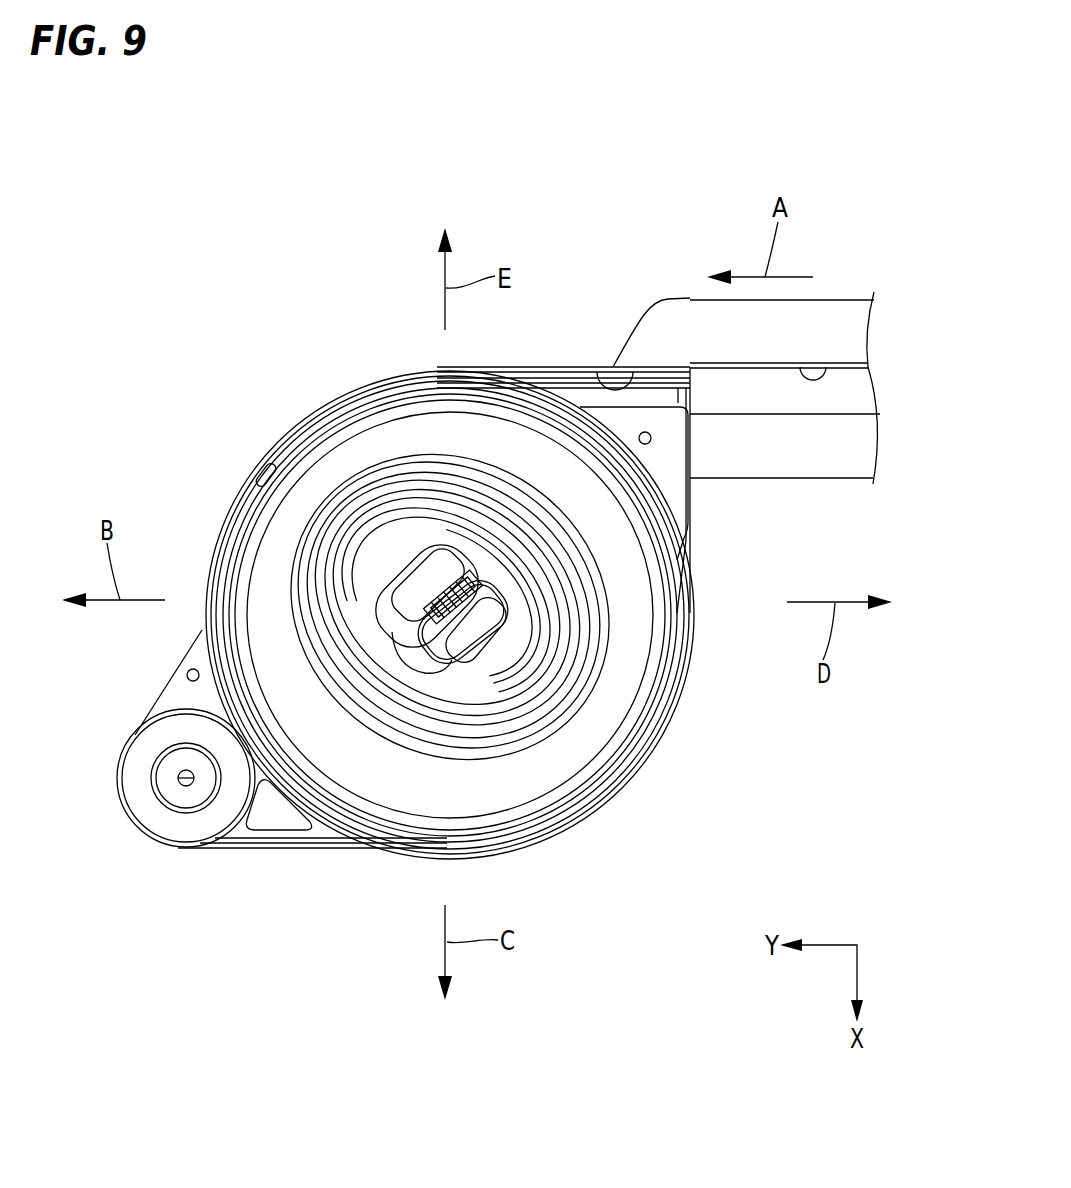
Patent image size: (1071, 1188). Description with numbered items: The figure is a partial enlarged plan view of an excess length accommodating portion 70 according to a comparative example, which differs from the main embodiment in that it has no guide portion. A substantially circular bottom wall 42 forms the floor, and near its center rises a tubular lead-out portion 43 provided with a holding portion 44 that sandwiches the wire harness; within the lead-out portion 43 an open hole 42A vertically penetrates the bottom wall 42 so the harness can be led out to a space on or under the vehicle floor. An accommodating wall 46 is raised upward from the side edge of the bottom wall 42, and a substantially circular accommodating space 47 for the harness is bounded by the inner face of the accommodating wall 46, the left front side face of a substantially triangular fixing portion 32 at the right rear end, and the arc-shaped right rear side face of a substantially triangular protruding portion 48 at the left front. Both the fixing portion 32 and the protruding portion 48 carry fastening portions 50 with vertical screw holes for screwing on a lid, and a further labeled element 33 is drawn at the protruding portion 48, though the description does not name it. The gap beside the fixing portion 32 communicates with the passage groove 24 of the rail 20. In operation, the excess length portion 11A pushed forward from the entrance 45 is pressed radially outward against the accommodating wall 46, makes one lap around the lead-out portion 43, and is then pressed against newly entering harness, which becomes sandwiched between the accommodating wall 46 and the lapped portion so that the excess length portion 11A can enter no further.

The excess length portion 11A is at (437, 383).
The excess length accommodating portion 70 is at (376, 356).
The accommodating wall 46 is at (530, 377).
The entrance 45 is at (593, 375).
The passage groove 24 is at (826, 367).
The rail 20 is at (793, 463).
The fixing portion 32 is at (683, 510).
The fastening portion 50 is at (651, 439).
The protruding portion 48 is at (160, 705).
The roller 33 is at (150, 812).
The bottom wall 42 is at (617, 707).
The open hole 42A is at (388, 620).
The lead-out portion 43 is at (415, 557).
The holding portion 44 is at (457, 572).
The accommodating space 47 is at (258, 485).